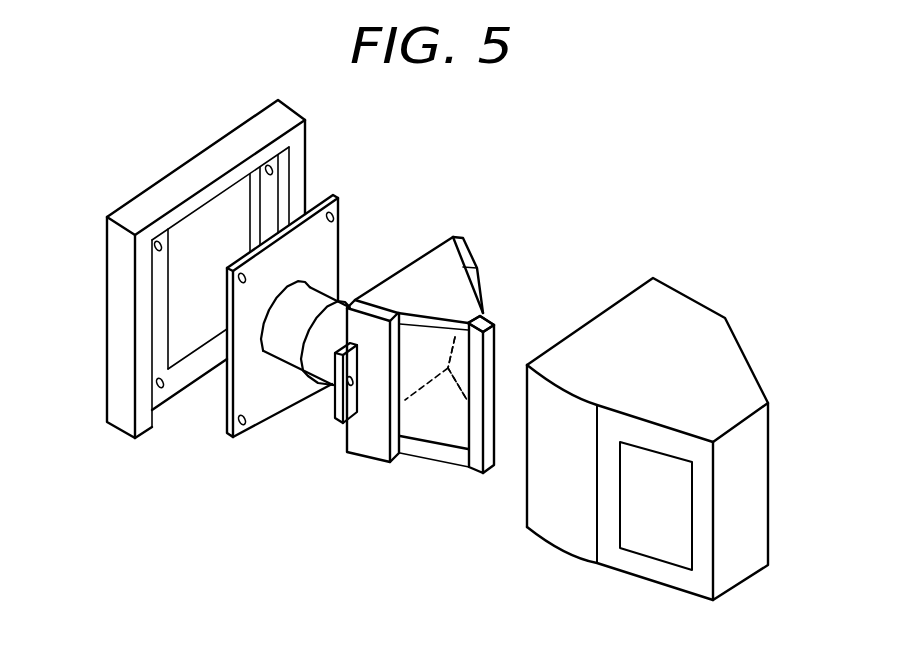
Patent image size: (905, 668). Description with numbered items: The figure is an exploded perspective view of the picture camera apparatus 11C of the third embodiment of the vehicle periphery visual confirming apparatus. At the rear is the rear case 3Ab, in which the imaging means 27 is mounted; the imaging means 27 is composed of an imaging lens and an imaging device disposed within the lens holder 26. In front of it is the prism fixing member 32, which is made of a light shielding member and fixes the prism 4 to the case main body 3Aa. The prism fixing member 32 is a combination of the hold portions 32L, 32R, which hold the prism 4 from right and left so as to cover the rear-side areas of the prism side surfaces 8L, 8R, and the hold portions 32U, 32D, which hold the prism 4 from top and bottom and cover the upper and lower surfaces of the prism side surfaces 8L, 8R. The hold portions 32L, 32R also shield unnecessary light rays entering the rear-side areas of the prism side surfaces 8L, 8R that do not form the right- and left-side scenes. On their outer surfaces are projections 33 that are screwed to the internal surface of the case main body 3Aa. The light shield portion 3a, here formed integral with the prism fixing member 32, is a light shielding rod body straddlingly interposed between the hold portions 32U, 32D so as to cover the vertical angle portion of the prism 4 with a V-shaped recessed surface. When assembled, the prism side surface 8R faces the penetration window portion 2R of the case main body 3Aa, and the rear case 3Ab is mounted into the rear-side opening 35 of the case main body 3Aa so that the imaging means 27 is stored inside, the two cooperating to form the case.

The picture camera apparatus 11C is at (95, 77).
The rear case 3Ab is at (147, 207).
The lens holder 26 is at (266, 346).
The imaging means 27 is at (285, 350).
The projections 33 is at (340, 418).
The prism fixing member 32 is at (446, 363).
The hold portion 32U is at (402, 283).
The hold portion 32L is at (466, 238).
The hold portion 32R is at (370, 450).
The hold portion 32D is at (440, 450).
The prism 4 is at (428, 427).
The prism side surface 8R is at (457, 437).
The prism side surface 8L is at (462, 358).
The light shield portion 3a is at (486, 313).
The rear-side opening 35 is at (629, 278).
The case main body 3Aa is at (673, 424).
The penetration window portion 2R is at (653, 545).